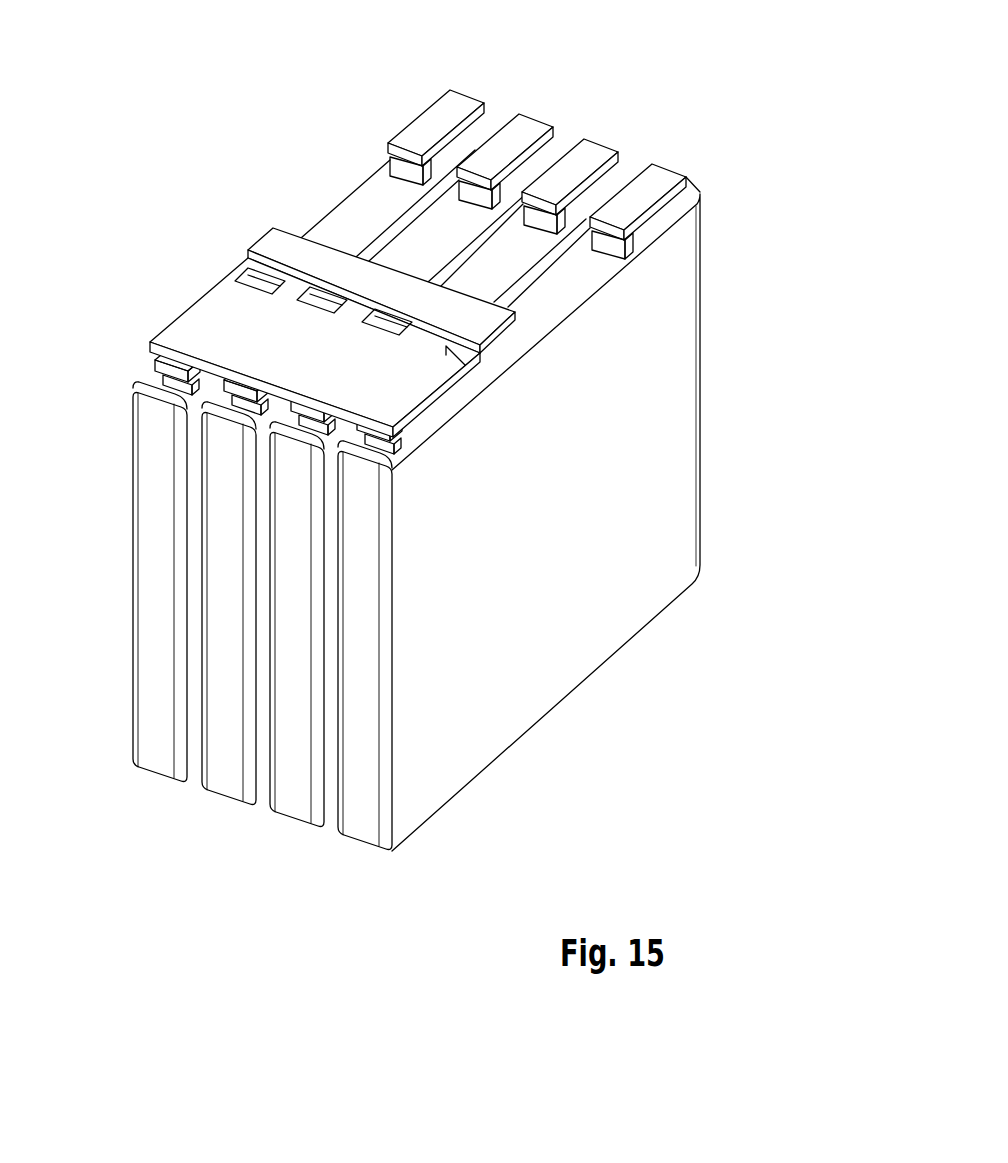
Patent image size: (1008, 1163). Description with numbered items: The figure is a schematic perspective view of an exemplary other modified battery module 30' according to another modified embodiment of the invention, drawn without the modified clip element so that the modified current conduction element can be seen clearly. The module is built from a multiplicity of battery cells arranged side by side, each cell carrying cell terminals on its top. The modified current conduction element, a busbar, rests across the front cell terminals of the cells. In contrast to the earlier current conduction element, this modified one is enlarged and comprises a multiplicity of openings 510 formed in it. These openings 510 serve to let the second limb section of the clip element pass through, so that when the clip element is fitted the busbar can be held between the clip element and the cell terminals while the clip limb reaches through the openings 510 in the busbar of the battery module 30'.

The other modified battery module 30' is at (381, 500).
The opening 510 is at (442, 352).